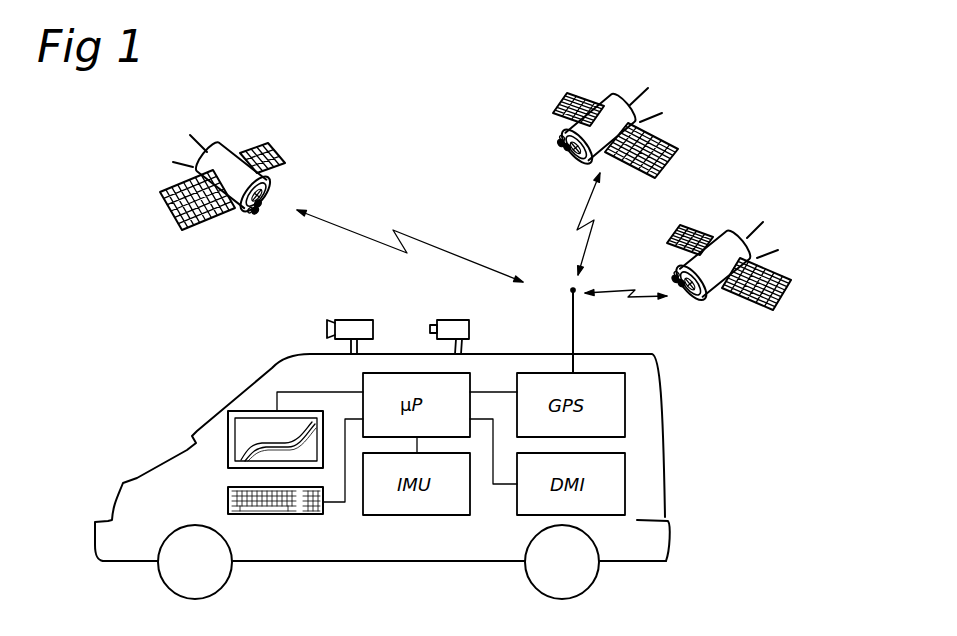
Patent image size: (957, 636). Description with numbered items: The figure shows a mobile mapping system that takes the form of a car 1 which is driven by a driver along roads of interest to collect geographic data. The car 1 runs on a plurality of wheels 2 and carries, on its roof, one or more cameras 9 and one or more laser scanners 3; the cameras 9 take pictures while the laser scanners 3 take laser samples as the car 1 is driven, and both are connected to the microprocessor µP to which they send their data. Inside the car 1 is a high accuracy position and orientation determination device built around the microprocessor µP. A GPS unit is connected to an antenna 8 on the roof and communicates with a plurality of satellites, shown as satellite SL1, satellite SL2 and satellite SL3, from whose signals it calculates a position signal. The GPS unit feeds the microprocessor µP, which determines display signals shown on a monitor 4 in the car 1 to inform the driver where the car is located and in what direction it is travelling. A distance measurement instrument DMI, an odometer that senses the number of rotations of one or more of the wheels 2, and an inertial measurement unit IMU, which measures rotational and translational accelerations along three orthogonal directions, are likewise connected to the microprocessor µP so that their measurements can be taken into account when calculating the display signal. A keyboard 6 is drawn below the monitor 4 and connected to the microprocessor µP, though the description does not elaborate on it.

The car 1 is at (155, 480).
The wheels 2 is at (183, 573).
The laser scanner 3 is at (462, 338).
The monitor 4 is at (253, 428).
The keyboard 6 is at (231, 500).
The antenna 8 is at (570, 330).
The camera 9 is at (357, 338).
The satellite SL1 is at (222, 169).
The satellite SL2 is at (639, 133).
The satellite SL3 is at (729, 246).